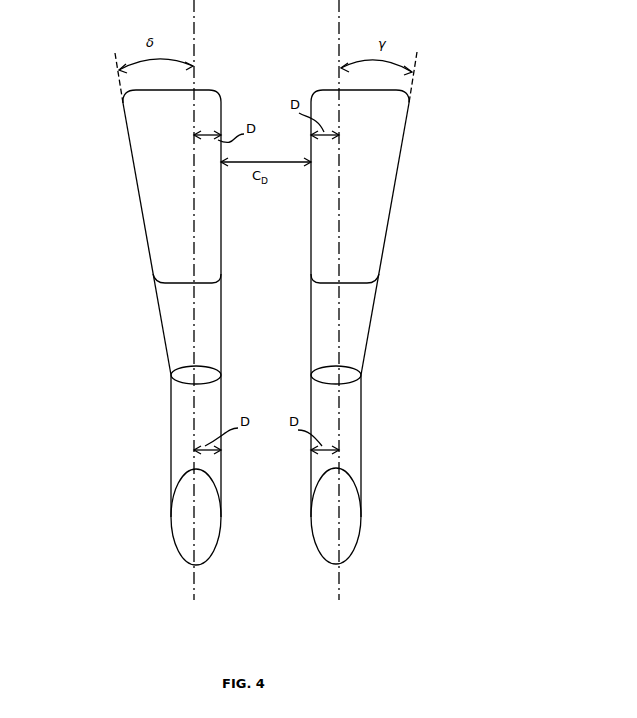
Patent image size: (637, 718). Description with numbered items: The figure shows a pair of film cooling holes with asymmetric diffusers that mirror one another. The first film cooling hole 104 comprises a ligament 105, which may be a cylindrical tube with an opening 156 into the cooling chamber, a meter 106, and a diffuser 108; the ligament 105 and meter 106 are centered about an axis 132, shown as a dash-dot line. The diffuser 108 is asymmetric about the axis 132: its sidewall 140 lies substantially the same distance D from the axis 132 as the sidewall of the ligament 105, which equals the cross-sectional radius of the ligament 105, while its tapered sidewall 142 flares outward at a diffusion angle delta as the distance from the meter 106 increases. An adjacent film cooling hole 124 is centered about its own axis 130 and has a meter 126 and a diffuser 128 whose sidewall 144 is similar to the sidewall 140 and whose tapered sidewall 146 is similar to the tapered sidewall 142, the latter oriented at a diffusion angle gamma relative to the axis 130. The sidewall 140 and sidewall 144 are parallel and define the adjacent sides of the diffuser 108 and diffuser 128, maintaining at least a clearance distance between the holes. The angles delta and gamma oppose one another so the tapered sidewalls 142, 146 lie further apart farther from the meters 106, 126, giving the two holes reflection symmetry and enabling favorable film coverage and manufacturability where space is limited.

The film cooling hole 104 is at (175, 468).
The ligament 105 is at (175, 424).
The meter 106 is at (171, 378).
The diffuser 108 is at (222, 104).
The film cooling hole 124 is at (355, 432).
The meter 126 is at (358, 372).
The diffuser 128 is at (398, 150).
The axis 130 is at (339, 590).
The axis 132 is at (194, 590).
The sidewall 140 is at (221, 202).
The tapered sidewall 142 is at (145, 235).
The sidewall 144 is at (311, 213).
The tapered sidewall 146 is at (381, 262).
The opening 156 is at (176, 537).